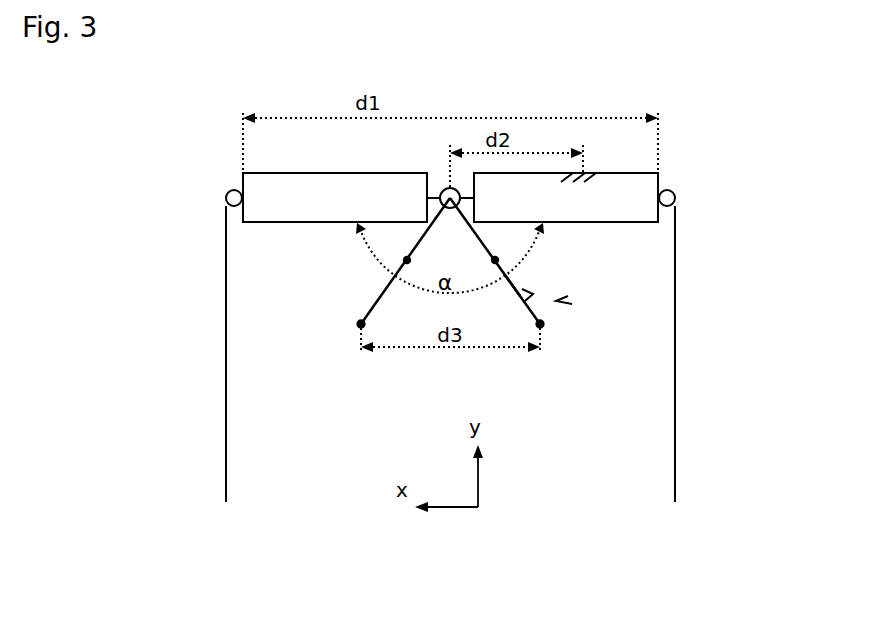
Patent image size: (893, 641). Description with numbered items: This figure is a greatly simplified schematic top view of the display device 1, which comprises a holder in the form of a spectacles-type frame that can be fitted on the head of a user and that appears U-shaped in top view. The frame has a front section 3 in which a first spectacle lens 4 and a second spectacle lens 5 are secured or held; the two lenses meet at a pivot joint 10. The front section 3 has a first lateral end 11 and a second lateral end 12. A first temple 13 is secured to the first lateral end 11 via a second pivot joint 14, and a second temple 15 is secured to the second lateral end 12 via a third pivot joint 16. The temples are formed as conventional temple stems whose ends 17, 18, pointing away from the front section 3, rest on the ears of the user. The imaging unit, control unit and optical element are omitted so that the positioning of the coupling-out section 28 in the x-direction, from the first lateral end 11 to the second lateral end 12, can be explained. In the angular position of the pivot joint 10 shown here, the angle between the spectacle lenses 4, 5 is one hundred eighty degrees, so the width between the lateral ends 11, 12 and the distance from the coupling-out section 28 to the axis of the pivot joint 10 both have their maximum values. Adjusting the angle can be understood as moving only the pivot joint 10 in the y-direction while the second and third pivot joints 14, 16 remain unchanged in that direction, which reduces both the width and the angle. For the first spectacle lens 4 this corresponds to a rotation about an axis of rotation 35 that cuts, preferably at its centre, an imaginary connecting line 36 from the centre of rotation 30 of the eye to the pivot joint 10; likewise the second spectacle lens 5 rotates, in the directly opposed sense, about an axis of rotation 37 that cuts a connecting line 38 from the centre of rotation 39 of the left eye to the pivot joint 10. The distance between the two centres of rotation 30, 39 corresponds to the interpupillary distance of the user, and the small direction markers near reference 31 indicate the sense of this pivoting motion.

The display device 1 is at (682, 261).
The front section 3 is at (238, 168).
The first spectacle lens 4 is at (520, 207).
The second spectacle lens 5 is at (318, 207).
The pivot joint 10 is at (444, 189).
The first lateral end 11 is at (660, 176).
The second lateral end 12 is at (242, 175).
The first temple 13 is at (675, 317).
The second pivot joint 14 is at (675, 191).
The second temple 15 is at (226, 312).
The third pivot joint 16 is at (227, 192).
The end of first temple 17 is at (675, 480).
The end of second temple 18 is at (226, 472).
The coupling-out section 28 is at (584, 172).
The centre of rotation of the eye 30 is at (541, 323).
The pivot direction 31 is at (518, 294).
The axis of rotation 35 is at (497, 260).
The connecting line 36 is at (516, 292).
The axis of rotation 37 is at (405, 260).
The connecting line 38 is at (380, 294).
The centre of rotation of the left eye 39 is at (360, 323).